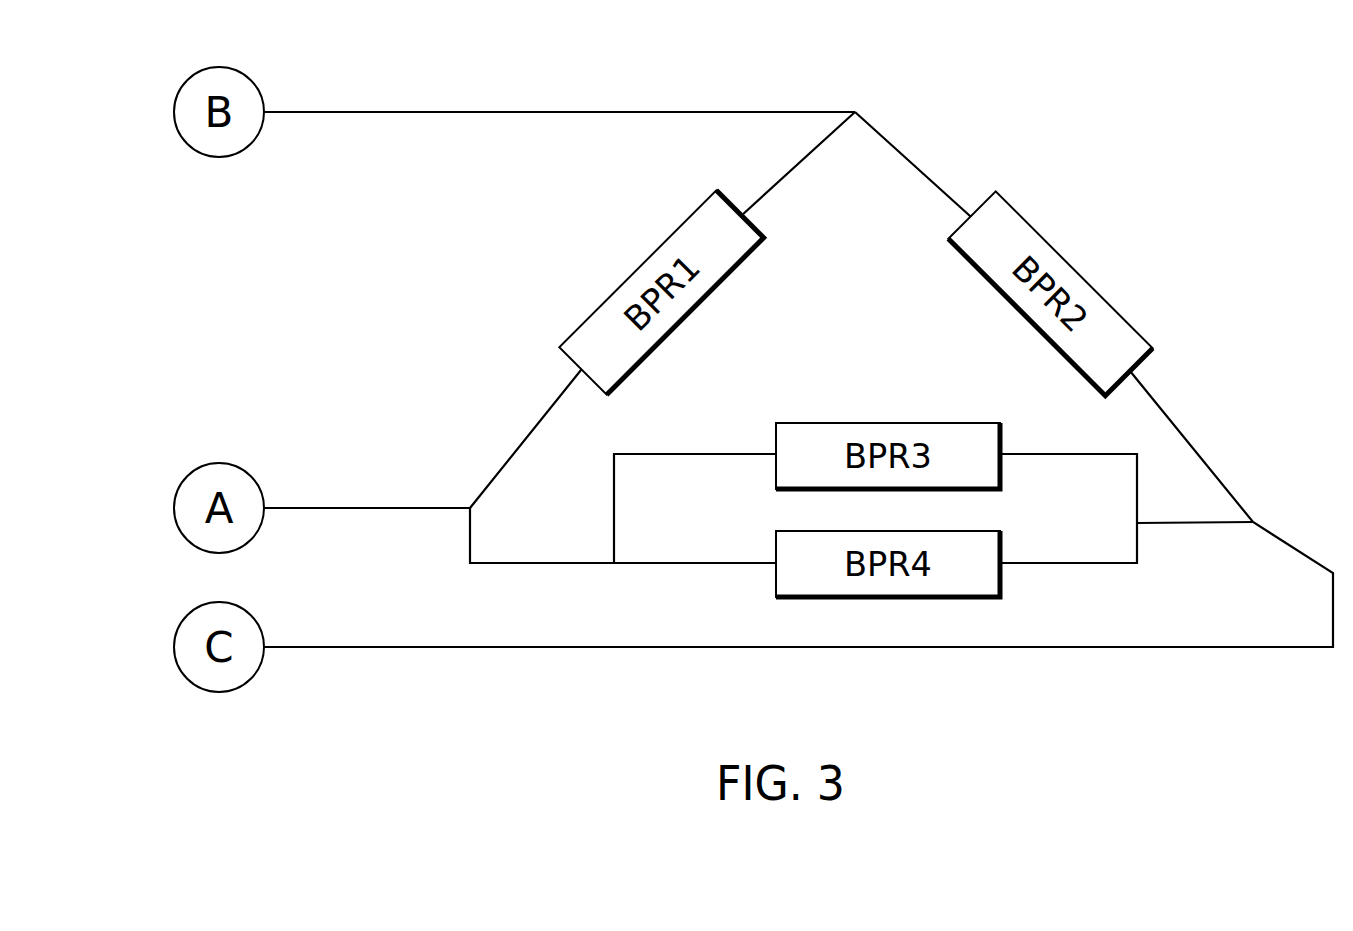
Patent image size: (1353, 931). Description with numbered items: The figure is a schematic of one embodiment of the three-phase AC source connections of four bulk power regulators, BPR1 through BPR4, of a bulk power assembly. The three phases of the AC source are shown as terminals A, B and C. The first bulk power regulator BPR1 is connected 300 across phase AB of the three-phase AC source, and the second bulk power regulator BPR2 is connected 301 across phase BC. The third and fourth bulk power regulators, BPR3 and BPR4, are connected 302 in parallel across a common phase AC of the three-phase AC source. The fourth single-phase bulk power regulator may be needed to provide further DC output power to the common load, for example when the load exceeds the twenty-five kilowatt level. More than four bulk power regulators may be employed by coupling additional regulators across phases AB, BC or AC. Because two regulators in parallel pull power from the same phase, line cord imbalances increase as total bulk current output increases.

The connection of BPR1 across phase AB 300 is at (518, 447).
The connection of BPR2 across phase BC 301 is at (923, 168).
The parallel connection of BPR3 and BPR4 across phase AC 302 is at (1187, 523).